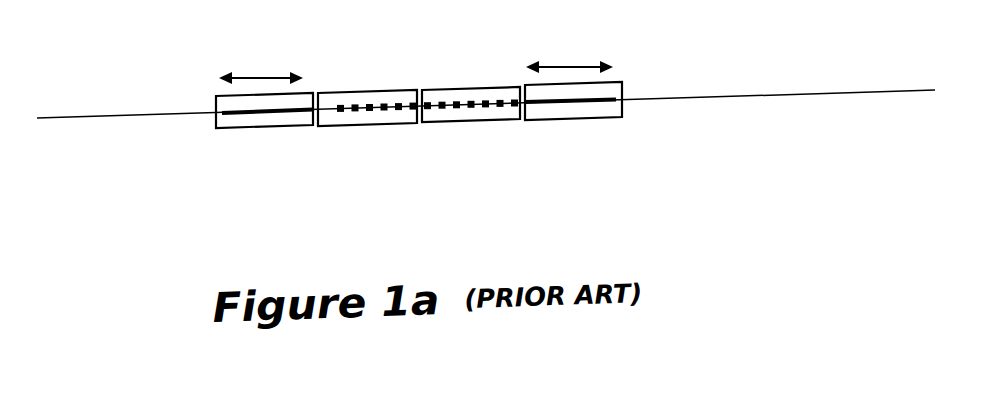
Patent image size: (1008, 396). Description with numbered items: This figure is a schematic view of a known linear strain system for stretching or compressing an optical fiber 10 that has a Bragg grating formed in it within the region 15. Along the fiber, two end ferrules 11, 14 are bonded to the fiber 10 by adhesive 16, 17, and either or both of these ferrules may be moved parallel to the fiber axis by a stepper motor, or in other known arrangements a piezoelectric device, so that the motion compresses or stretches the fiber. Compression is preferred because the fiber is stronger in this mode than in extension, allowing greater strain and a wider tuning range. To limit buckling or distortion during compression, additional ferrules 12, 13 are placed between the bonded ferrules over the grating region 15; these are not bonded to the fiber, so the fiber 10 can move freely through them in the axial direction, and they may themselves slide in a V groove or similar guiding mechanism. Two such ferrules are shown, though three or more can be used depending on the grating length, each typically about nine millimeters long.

The optical fiber 10 is at (128, 118).
The ferrule 11 is at (280, 128).
The additional ferrule 12 is at (370, 88).
The additional ferrule 13 is at (453, 87).
The ferrule 14 is at (550, 120).
The region 15 is at (513, 167).
The adhesive 16 is at (233, 115).
The adhesive 17 is at (602, 104).